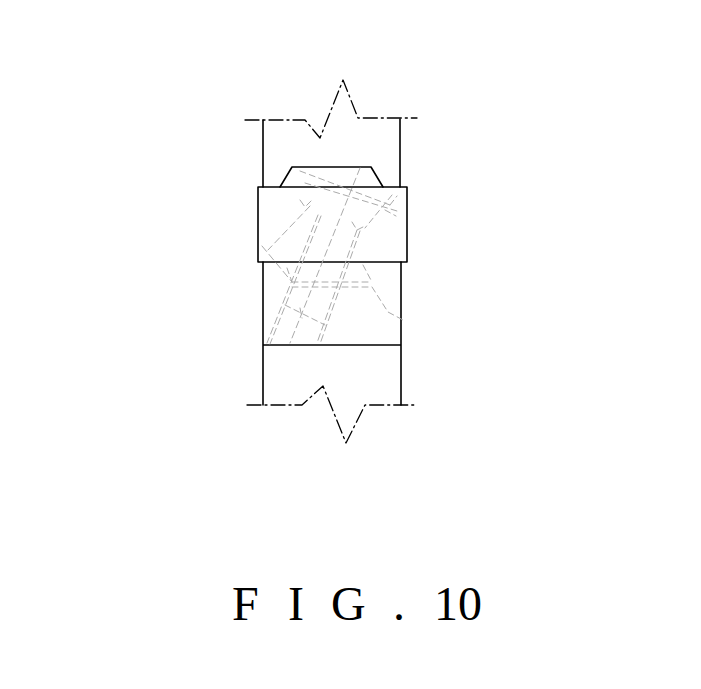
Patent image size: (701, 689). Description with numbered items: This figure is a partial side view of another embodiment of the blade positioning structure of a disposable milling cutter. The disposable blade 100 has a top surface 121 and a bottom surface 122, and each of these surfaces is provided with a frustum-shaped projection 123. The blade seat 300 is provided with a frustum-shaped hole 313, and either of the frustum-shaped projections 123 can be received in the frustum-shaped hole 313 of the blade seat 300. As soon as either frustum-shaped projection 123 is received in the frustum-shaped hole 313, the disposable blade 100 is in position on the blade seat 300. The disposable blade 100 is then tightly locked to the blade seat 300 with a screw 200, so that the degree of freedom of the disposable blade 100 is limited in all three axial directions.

The disposable blade 100 is at (267, 223).
The top surface 121 is at (262, 185).
The bottom surface 122 is at (263, 270).
The frustum-shaped projection 123 is at (365, 167).
The screw 200 is at (407, 188).
The blade seat 300 is at (407, 256).
The frustum-shaped hole 313 is at (403, 320).